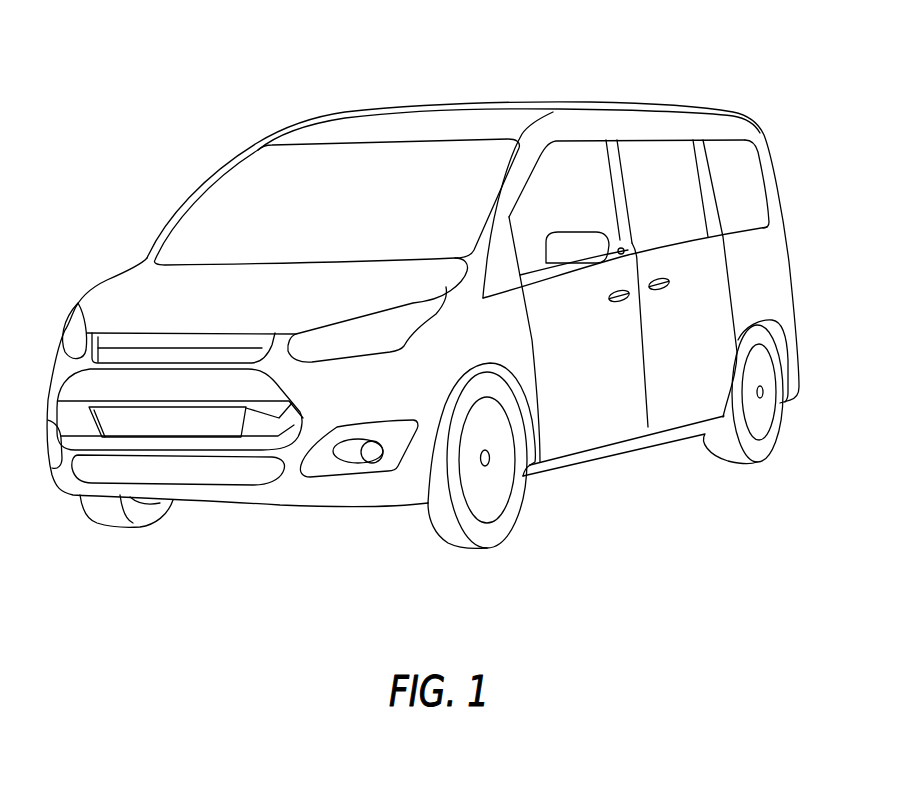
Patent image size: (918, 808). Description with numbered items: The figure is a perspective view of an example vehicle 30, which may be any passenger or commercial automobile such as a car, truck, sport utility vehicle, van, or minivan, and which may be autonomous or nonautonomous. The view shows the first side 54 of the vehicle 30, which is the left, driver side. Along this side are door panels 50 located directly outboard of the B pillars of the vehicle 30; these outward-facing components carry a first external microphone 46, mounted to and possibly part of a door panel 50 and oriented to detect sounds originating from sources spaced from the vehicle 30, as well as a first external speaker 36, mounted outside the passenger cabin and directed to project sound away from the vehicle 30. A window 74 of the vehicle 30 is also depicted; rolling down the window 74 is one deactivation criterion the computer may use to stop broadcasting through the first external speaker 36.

The vehicle 30 is at (191, 90).
The window 74 is at (563, 173).
The first external speaker 36 is at (612, 162).
The door panels 50 is at (612, 185).
The first external microphone 46 is at (626, 251).
The first side 54 is at (585, 395).